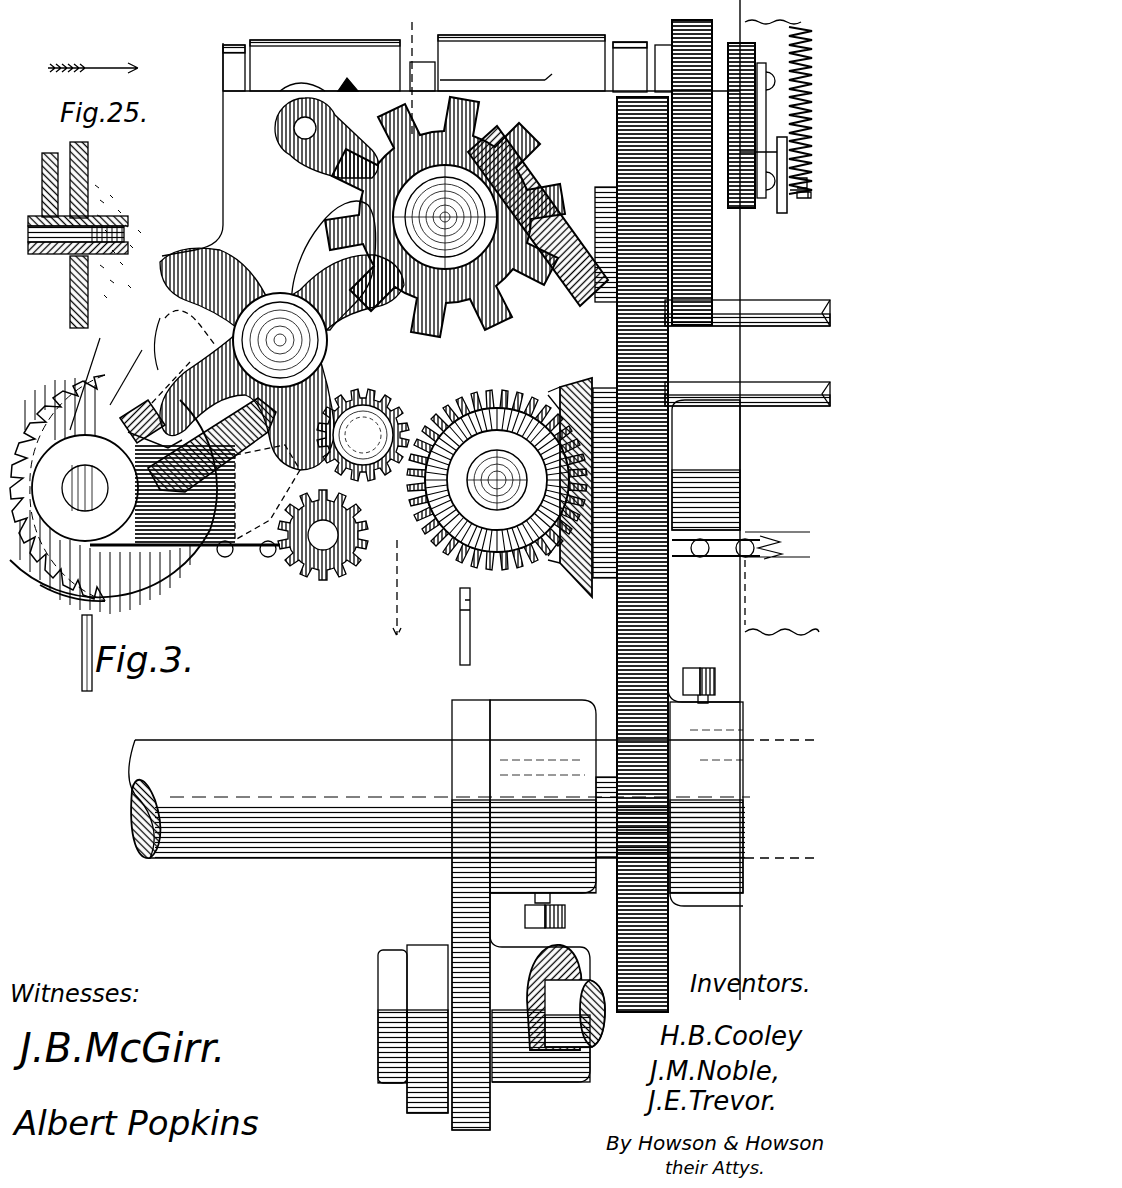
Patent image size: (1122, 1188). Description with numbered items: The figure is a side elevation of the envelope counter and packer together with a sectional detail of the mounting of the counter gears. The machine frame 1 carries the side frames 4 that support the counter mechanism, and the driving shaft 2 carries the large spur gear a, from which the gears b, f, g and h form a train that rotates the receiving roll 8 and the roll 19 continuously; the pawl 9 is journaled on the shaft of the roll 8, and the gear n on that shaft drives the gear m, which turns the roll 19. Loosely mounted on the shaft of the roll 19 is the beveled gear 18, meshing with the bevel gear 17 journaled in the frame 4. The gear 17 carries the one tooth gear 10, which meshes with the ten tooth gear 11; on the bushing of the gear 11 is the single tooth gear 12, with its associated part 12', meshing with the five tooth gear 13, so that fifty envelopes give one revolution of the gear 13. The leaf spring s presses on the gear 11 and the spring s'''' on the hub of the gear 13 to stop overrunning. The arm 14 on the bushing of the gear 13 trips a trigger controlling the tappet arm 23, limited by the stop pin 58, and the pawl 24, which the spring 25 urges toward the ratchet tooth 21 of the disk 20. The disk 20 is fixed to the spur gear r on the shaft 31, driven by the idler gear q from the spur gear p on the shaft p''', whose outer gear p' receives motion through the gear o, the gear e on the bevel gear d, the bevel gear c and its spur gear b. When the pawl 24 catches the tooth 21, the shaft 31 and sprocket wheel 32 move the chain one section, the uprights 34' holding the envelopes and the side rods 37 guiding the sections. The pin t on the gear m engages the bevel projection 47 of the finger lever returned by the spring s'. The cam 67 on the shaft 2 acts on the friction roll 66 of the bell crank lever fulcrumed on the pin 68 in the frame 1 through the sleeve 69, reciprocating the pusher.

In FIG. 3, the frame of the machine 1 is at (779, 907).
In FIG. 3, the driving shaft 2 is at (472, 799).
In FIG. 3, the side frame 4 is at (237, 133).
In FIG. 3, the receiving roll 8 is at (427, 63).
In FIG. 3, the pawl 9 is at (422, 76).
In FIG. 3, the one tooth gear 10 is at (292, 152).
In FIG. 25, the ten tooth gear 11 is at (88, 156).
In FIG. 3, the ten tooth gear 11 is at (438, 104).
In FIG. 25, the single tooth gear 12 is at (69, 197).
In FIG. 3, the single tooth gear 12 is at (445, 217).
In FIG. 25, the flange 12' is at (71, 265).
In FIG. 3, the five tooth gear 13 is at (334, 265).
In FIG. 3, the arm 14 is at (213, 445).
In FIG. 3, the bevel gear 17 is at (300, 85).
In FIG. 3, the beveled gear 18 is at (350, 80).
In FIG. 3, the roll 19 is at (560, 70).
In FIG. 3, the disk 20 is at (166, 588).
In FIG. 3, the ratchet tooth 21 is at (32, 380).
In FIG. 3, the tappet arm 23 is at (129, 369).
In FIG. 3, the pawl 24 is at (190, 328).
In FIG. 3, the spring 25 is at (183, 375).
In FIG. 3, the shaft 31 is at (85, 488).
In FIG. 3, the sprocket wheel 32 is at (89, 376).
In FIG. 3, the upright 34' is at (300, 626).
In FIG. 3, the side rod 37 is at (778, 308).
In FIG. 3, the bevel projection 47 is at (790, 204).
In FIG. 3, the stop pin 58 is at (150, 333).
In FIG. 3, the friction roll 66 is at (474, 1132).
In FIG. 3, the cam 67 is at (488, 706).
In FIG. 3, the pin 68 is at (378, 1006).
In FIG. 3, the sleeve 69 is at (542, 1086).
In FIG. 3, the spur gear a is at (668, 640).
In FIG. 3, the spur gear b is at (672, 428).
In FIG. 3, the bevel gear c is at (582, 478).
In FIG. 3, the bevel gear d is at (512, 388).
In FIG. 3, the gear e is at (467, 364).
In FIG. 3, the gear f is at (617, 342).
In FIG. 3, the gear g is at (740, 258).
In FIG. 3, the gear h is at (712, 22).
In FIG. 3, the gear m is at (750, 208).
In FIG. 3, the gear n is at (757, 62).
In FIG. 3, the gear o is at (363, 434).
In FIG. 3, the spur gear p is at (497, 480).
In FIG. 3, the pinion p' is at (361, 596).
In FIG. 3, the shaft p''' is at (323, 555).
In FIG. 3, the idler gear q is at (195, 501).
In FIG. 3, the spur gear r is at (68, 590).
In FIG. 3, the leaf spring s is at (538, 216).
In FIG. 3, the spring s' is at (782, 99).
In FIG. 3, the spring s'''' is at (282, 359).
In FIG. 3, the pin t is at (779, 150).